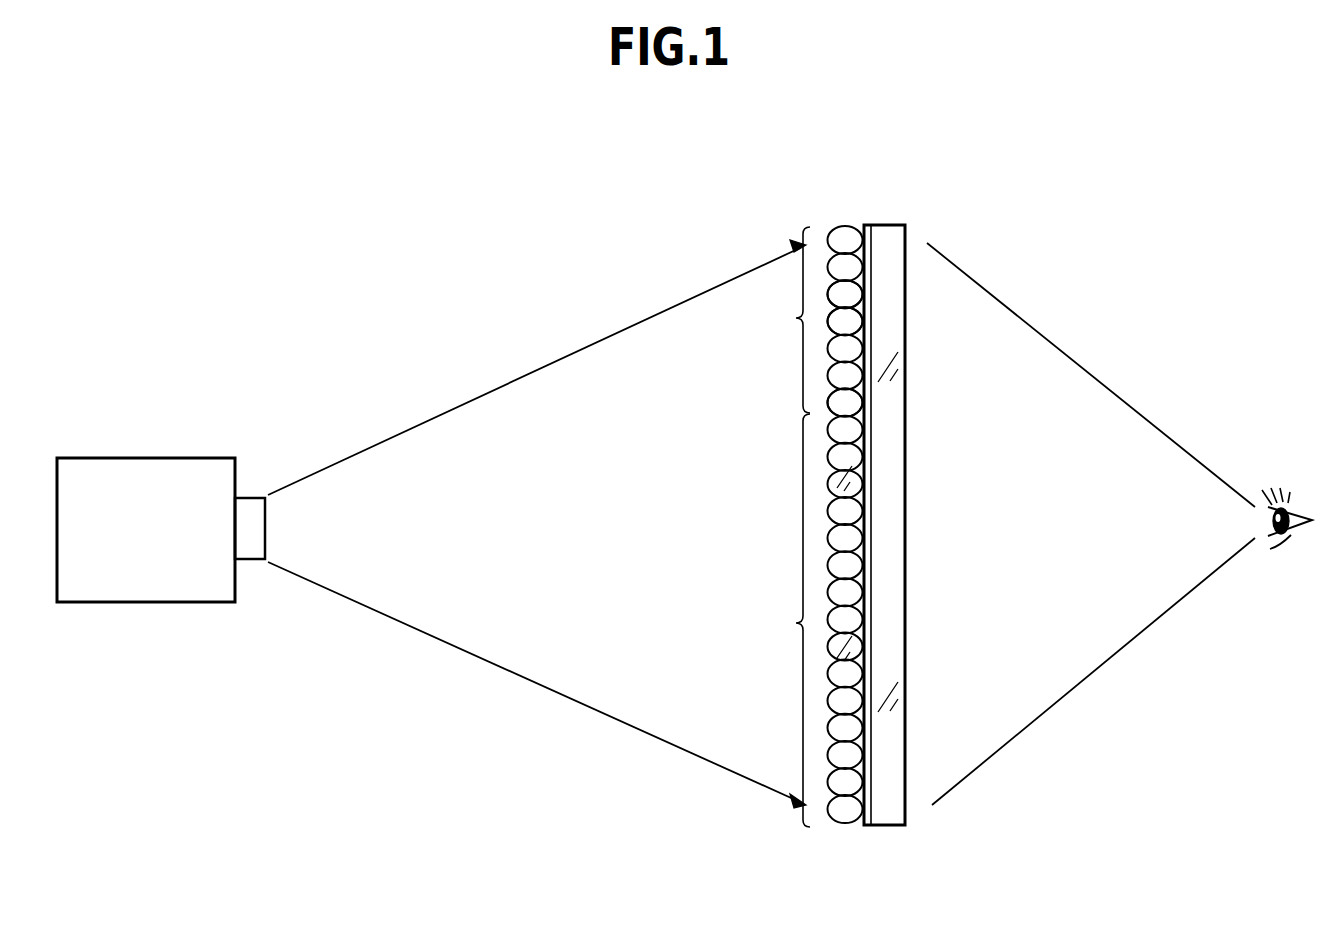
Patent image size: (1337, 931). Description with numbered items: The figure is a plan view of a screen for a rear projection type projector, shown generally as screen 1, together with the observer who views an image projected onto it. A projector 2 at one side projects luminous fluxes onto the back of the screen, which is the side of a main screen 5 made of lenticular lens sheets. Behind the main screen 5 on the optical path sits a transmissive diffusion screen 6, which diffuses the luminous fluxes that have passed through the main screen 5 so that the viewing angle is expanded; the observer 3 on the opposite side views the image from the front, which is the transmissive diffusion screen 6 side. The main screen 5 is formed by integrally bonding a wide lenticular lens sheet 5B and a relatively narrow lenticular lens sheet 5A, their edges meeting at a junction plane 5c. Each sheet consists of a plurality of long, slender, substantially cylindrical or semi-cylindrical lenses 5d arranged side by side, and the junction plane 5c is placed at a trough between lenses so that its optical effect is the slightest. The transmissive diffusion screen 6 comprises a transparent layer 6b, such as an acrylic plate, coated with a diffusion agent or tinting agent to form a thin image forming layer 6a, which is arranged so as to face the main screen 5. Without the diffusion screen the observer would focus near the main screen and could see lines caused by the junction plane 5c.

The rear projection screen 1 is at (810, 509).
The projector 2 is at (88, 582).
The observer 3 is at (1298, 534).
The main screen 5 is at (845, 235).
The lenticular lens sheet 5A is at (782, 320).
The lenticular lens sheet 5B is at (782, 620).
The junction plane 5c is at (836, 410).
The lenses 5d is at (828, 308).
The transmissive diffusion screen 6 is at (904, 534).
The image forming layer 6a is at (870, 805).
The transparent layer 6b is at (895, 783).